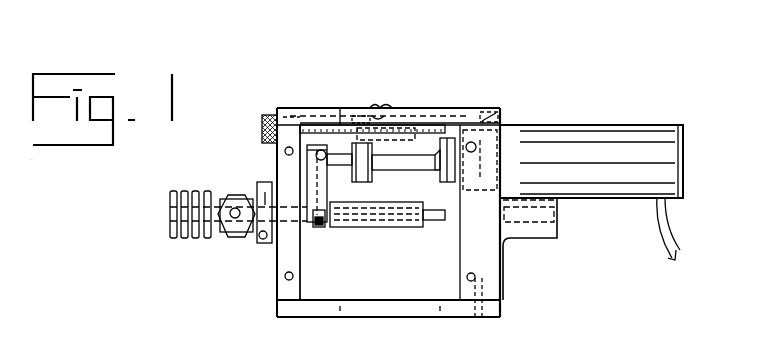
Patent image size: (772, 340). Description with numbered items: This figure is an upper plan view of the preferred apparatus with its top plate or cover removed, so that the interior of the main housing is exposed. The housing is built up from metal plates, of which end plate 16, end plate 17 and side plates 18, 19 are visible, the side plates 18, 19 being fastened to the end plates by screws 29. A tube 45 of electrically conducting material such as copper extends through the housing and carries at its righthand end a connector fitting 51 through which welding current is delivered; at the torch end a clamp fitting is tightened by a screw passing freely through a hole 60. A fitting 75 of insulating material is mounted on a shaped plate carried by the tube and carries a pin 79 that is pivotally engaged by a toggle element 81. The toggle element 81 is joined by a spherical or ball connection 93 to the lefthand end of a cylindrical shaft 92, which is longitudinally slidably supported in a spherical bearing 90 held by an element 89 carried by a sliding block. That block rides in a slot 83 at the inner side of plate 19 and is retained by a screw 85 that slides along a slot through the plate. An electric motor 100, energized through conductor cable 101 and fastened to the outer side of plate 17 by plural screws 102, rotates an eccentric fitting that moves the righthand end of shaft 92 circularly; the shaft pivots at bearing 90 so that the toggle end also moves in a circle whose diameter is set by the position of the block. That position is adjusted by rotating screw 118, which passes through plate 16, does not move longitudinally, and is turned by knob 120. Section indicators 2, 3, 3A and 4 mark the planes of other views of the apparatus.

The section line 2- 2 is at (135, 252).
The section line 3- 3 is at (312, 67).
The section line 3A- 3A is at (425, 83).
The section line 4- 4 is at (297, 142).
The plate 16 is at (277, 284).
The plate 17 is at (503, 282).
The side plate 18 is at (382, 317).
The side plate 19 is at (462, 108).
The screws 29 is at (502, 110).
The tube 45 is at (533, 240).
The connector fitting 51 is at (558, 232).
The hole 60 is at (230, 235).
The fitting 75 is at (398, 228).
The pin 79 is at (318, 229).
The toggle element 81 is at (300, 171).
The slot 83 is at (360, 116).
The screw 85 is at (378, 107).
The element 89 is at (365, 184).
The spherical bearing 90 is at (355, 176).
The cylindrical shaft 92 is at (399, 170).
The ball connection 93 is at (326, 118).
The electric motor 100 is at (590, 125).
The conductor cable 101 is at (678, 239).
The screws 102 is at (458, 229).
The screw 118 is at (343, 108).
The turning knob 120 is at (262, 120).